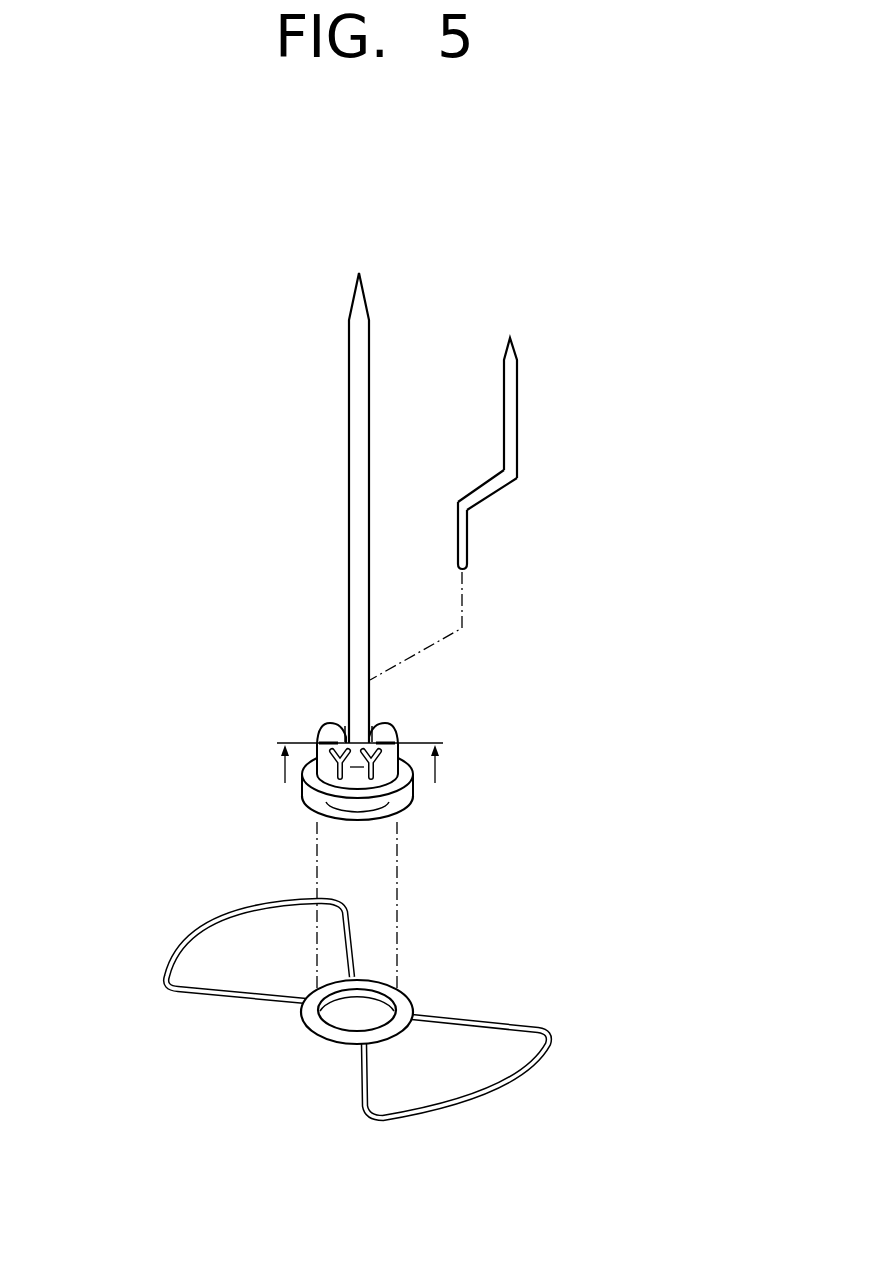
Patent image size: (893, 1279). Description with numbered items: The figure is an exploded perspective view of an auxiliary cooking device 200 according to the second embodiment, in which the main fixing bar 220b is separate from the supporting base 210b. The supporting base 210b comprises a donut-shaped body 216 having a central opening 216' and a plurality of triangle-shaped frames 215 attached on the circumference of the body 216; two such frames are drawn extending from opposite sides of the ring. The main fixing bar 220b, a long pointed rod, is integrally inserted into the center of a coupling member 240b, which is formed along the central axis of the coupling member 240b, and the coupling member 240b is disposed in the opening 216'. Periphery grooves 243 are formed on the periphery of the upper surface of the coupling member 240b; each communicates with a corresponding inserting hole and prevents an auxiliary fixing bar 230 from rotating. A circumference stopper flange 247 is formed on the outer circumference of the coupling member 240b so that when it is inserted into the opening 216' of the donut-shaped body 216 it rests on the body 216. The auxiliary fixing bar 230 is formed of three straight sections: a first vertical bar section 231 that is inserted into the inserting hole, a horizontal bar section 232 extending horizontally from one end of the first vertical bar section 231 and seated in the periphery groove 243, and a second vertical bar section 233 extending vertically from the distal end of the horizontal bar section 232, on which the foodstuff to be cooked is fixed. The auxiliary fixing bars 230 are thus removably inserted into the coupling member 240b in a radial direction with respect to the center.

The auxiliary cooking device 200 is at (212, 562).
The supporting base 210b is at (185, 1097).
The triangle-shaped frame 215 is at (238, 997).
The donut-shaped body 216 is at (377, 1037).
The opening 216' is at (429, 984).
The main fixing bar 220b is at (358, 703).
The auxiliary fixing bar 230 is at (648, 487).
The first vertical bar section 231 is at (465, 545).
The horizontal bar section 232 is at (492, 488).
The second vertical bar section 233 is at (517, 422).
The coupling member 240b is at (337, 787).
The periphery groove 243 is at (347, 755).
The circumference stopper flange 247 is at (345, 805).